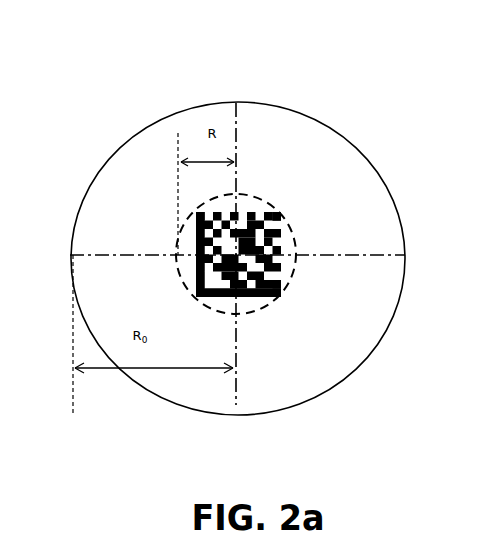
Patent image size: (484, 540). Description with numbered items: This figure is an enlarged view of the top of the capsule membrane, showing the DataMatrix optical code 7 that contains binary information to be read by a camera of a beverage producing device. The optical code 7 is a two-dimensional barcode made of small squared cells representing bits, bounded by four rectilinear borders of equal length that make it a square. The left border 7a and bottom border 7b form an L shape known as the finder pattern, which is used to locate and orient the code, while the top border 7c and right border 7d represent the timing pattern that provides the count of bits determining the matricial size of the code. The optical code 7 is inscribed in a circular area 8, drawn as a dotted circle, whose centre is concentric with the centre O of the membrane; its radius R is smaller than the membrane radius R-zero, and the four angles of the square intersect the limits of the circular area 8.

The DataMatrix optical code 7 is at (262, 207).
The left border 7a is at (199, 255).
The bottom border 7b is at (246, 292).
The top border 7c is at (243, 220).
The right border 7d is at (277, 247).
The circular area 8 is at (178, 245).
The centre of the membrane O is at (238, 256).